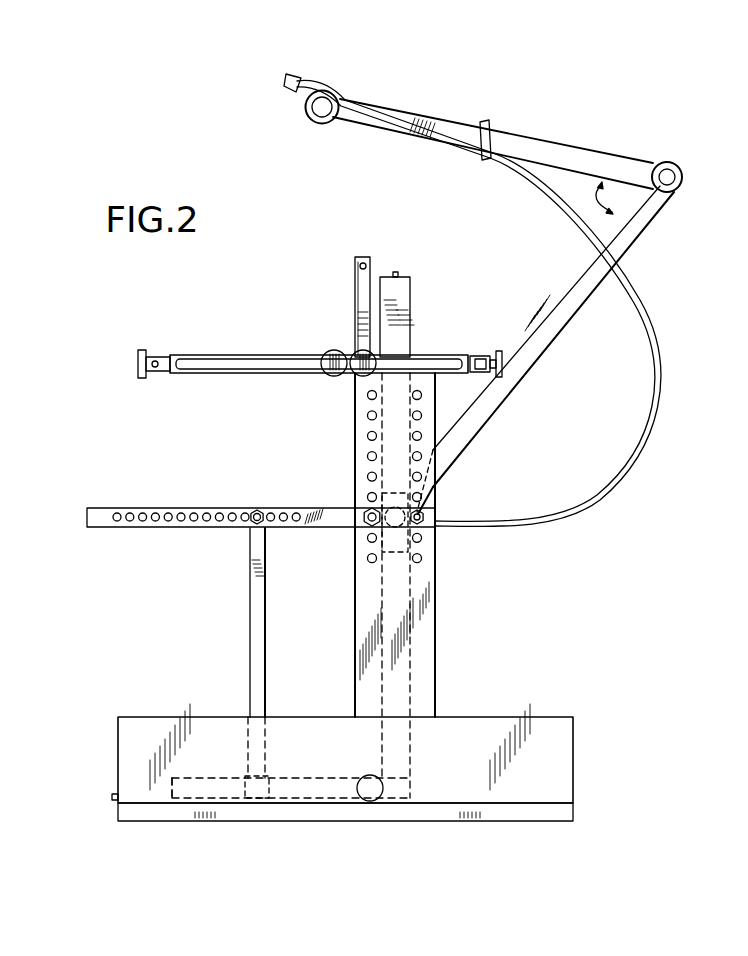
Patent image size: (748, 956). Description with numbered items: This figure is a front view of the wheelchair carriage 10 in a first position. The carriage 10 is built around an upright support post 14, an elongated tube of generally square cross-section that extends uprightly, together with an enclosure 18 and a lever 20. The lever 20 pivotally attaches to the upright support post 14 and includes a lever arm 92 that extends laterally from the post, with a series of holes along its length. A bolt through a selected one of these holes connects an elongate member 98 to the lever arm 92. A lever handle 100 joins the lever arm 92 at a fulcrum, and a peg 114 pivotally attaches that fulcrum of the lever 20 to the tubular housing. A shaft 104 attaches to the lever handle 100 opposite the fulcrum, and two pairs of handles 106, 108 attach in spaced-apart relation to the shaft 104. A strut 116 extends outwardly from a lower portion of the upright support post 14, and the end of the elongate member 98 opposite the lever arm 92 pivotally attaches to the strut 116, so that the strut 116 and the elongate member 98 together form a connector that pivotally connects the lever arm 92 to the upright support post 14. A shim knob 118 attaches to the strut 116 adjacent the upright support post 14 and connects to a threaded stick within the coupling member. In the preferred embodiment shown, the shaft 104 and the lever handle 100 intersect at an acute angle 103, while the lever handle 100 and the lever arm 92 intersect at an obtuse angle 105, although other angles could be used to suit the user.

The wheelchair carriage 10 is at (183, 144).
The upright support post 14 is at (398, 745).
The enclosure 18 is at (163, 333).
The lever 20 is at (550, 347).
The lever arm 92 is at (135, 527).
The elongate member 98 is at (250, 622).
The lever handle 100 is at (640, 217).
The acute angle 103 is at (597, 200).
The shaft 104 is at (540, 148).
The obtuse angle 105 is at (311, 498).
The handles 106 is at (303, 107).
The handles 108 is at (682, 166).
The peg 114 is at (432, 512).
The strut 116 is at (185, 790).
The shim knob 118 is at (372, 800).